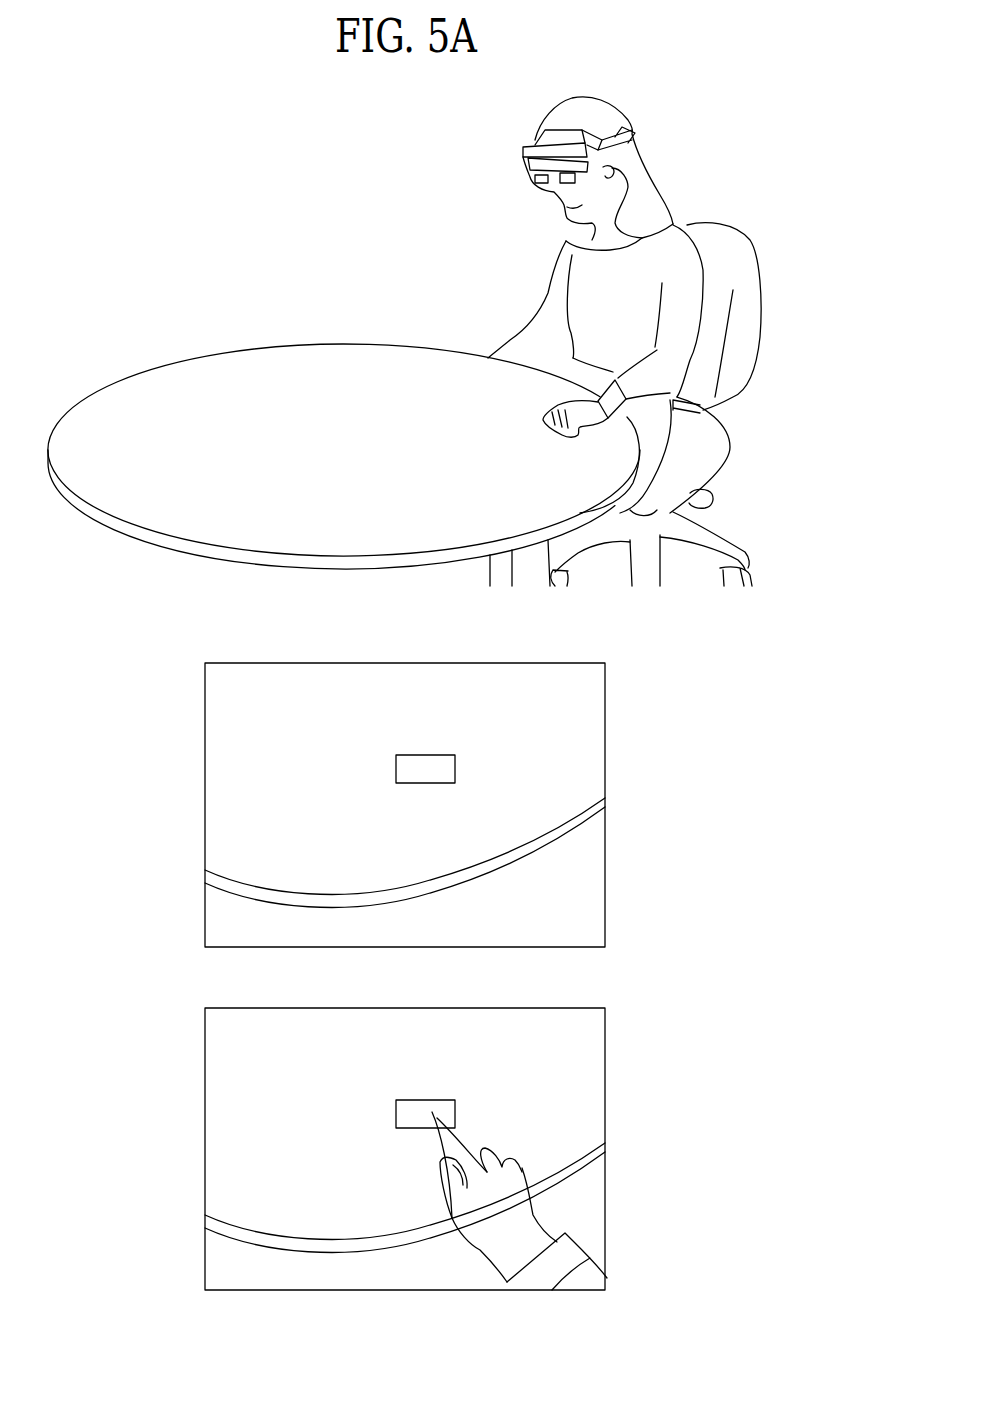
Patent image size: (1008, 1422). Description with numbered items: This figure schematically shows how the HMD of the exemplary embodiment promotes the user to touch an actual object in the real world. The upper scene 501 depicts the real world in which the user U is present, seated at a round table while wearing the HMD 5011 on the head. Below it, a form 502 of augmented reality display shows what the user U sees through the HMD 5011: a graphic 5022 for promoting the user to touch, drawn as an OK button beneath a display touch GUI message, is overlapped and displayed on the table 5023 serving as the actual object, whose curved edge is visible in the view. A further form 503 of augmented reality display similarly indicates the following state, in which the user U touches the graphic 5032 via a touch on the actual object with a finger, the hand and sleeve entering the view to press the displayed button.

The real world state 501 is at (404, 331).
The HMD 5011 is at (637, 135).
The user U is at (647, 257).
The form of augmented reality display 502 is at (362, 794).
The graphic 5022 is at (462, 772).
The table 5023 is at (218, 793).
The form of augmented reality display 503 is at (364, 1138).
The graphic 5032 is at (462, 1117).